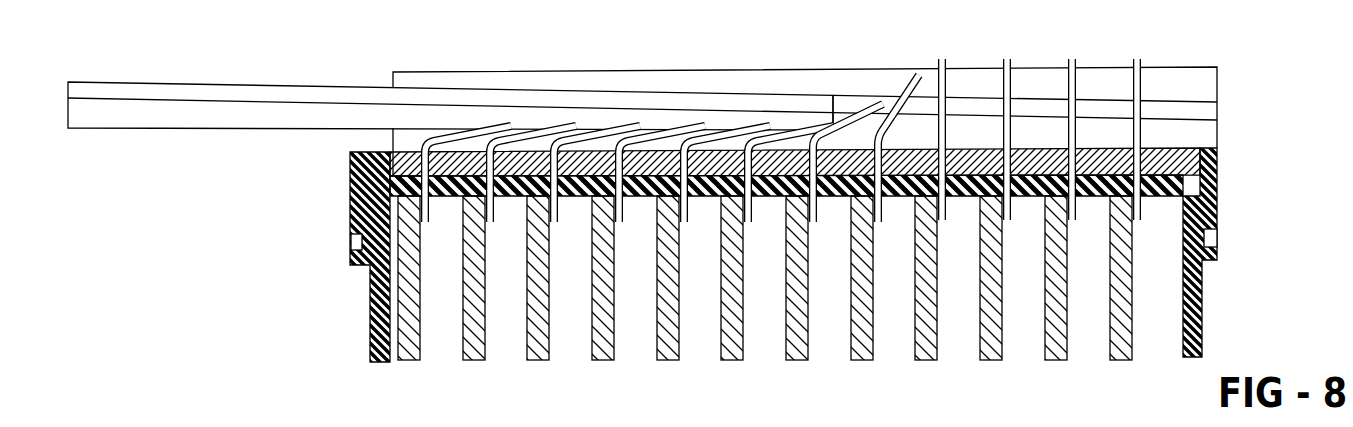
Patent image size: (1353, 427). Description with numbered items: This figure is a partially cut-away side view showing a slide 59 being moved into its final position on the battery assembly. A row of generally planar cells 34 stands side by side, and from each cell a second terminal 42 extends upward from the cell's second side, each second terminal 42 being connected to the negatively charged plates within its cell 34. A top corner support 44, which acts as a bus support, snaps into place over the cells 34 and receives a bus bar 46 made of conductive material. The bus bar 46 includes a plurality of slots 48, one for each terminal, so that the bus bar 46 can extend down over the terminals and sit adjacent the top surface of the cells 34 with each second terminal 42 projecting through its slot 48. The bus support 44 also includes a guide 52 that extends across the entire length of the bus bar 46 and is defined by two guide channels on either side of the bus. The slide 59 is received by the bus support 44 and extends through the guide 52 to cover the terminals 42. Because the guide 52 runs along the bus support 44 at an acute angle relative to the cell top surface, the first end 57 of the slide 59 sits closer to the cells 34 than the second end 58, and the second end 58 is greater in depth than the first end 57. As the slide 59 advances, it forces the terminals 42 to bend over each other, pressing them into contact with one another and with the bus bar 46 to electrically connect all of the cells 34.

The cells 34 is at (420, 338).
The second terminal 42 is at (1077, 278).
The top corner support 44 is at (542, 72).
The bus bar 46 is at (1173, 149).
The slot 48 is at (417, 151).
The guide 52 is at (1216, 101).
The first end 57 is at (842, 97).
The second end 58 is at (66, 80).
The slide 59 is at (360, 86).